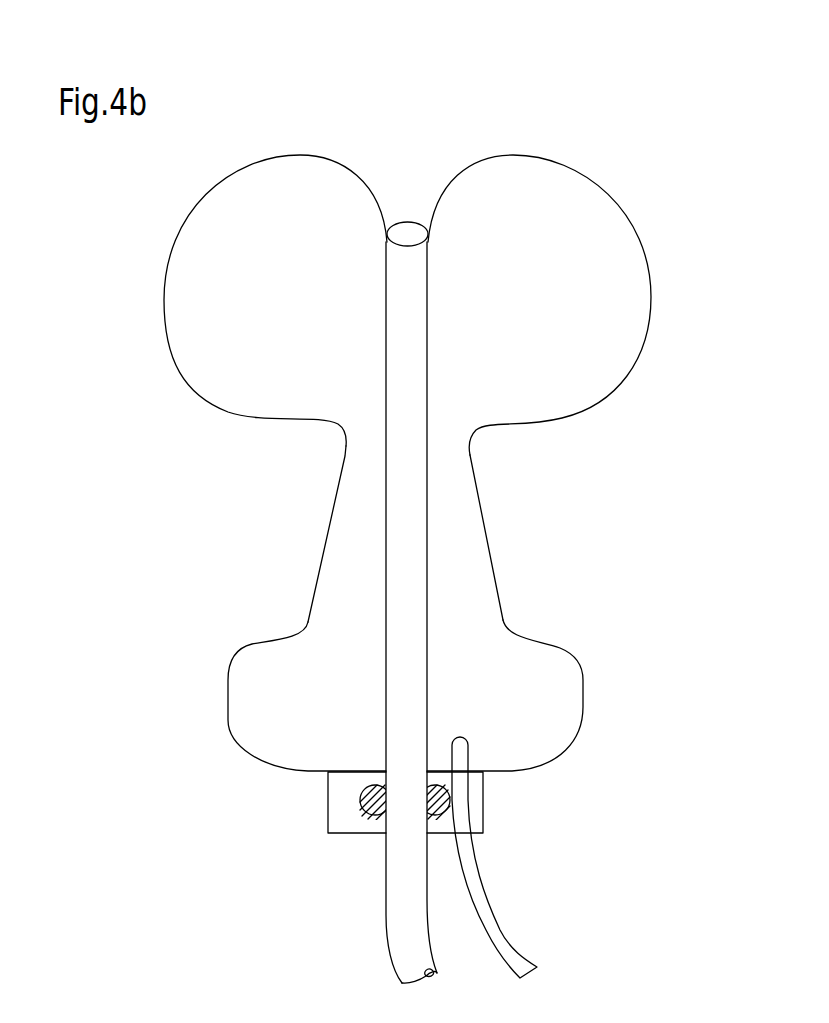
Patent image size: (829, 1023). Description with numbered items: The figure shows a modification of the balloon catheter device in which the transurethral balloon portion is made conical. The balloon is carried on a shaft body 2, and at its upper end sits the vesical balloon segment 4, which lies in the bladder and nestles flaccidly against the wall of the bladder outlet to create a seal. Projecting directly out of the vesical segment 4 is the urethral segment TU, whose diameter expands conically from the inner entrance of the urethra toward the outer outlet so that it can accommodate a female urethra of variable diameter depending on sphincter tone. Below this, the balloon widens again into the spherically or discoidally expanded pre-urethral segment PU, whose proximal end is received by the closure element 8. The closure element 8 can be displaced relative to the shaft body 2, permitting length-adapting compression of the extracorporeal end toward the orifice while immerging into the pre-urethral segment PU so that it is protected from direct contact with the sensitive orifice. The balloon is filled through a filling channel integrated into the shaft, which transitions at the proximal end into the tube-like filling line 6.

The vesical balloon segment 4 is at (610, 263).
The urethral balloon segment TU is at (457, 503).
The pre-urethral segment PU is at (560, 702).
The closure element 8 is at (335, 807).
The shaft body 2 is at (397, 897).
The filling line 6 is at (483, 875).